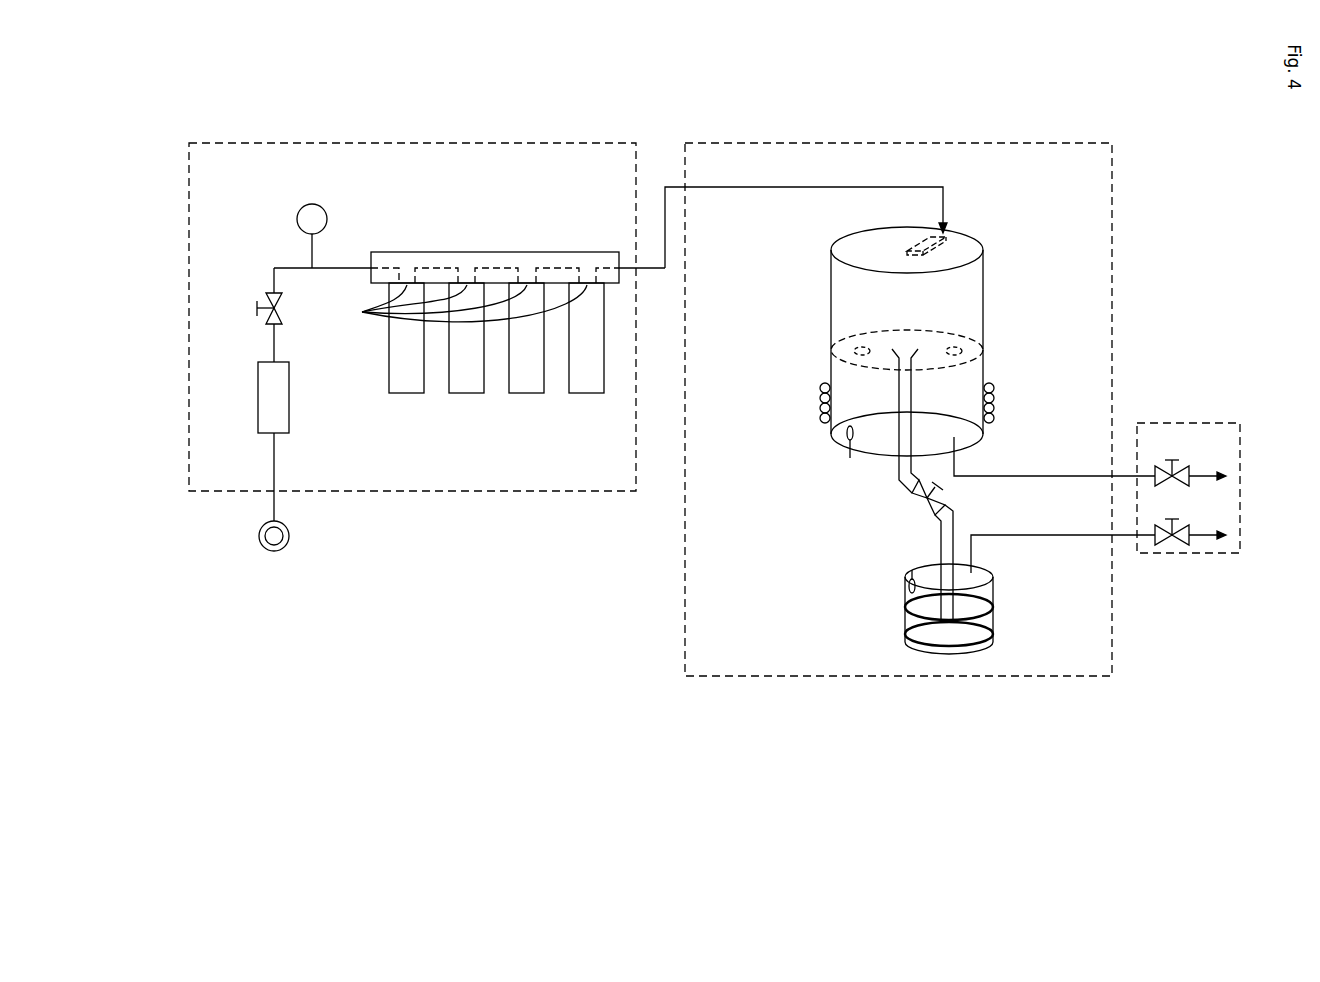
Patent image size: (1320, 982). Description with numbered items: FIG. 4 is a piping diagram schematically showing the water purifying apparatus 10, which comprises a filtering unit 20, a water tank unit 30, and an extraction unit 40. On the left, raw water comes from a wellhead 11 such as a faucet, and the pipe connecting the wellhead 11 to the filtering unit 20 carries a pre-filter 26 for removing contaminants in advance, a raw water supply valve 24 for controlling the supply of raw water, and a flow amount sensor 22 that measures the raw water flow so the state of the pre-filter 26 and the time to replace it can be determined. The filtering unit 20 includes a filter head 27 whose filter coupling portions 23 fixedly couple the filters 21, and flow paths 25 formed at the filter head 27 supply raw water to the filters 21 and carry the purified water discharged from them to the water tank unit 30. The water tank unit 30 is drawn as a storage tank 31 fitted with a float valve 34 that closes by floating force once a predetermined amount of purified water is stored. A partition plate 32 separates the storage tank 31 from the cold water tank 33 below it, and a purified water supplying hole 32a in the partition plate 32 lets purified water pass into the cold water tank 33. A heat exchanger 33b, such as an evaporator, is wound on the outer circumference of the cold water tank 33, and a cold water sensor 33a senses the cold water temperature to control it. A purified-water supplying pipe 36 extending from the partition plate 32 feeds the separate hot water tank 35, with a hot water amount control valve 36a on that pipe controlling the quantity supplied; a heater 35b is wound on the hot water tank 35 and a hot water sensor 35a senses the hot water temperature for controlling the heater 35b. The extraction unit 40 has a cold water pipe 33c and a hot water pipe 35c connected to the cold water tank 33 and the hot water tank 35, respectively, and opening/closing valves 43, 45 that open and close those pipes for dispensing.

The water purifying apparatus 10 is at (226, 83).
The wellhead 11 is at (259, 536).
The filtering unit 20 is at (386, 143).
The filter 21 is at (395, 393).
The flow amount sensor 22 is at (312, 204).
The filter coupling portions 23 is at (462, 303).
The raw water supply valve 24 is at (266, 301).
The flow paths 25 is at (437, 268).
The pre-filter 26 is at (258, 397).
The filter head 27 is at (467, 252).
The water tank unit 30 is at (898, 143).
The storage tank 31 is at (966, 287).
The partition plate 32 is at (966, 341).
The purified water supplying hole 32a is at (855, 350).
The cold water tank 33 is at (962, 396).
The cold water sensor 33a is at (846, 440).
The heat exchanger 33b is at (820, 408).
The cold water pipe 33c is at (1028, 476).
The float valve 34 is at (950, 246).
The hot water tank 35 is at (980, 588).
The hot water sensor 35a is at (908, 588).
The heater 35b is at (905, 626).
The hot water pipe 35c is at (1036, 535).
The purified-water supplying pipe 36 is at (907, 430).
The hot water amount control valve 36a is at (916, 496).
The extraction unit 40 is at (1188, 423).
The opening/closing valve 43 is at (1177, 468).
The opening/closing valve 45 is at (1177, 527).